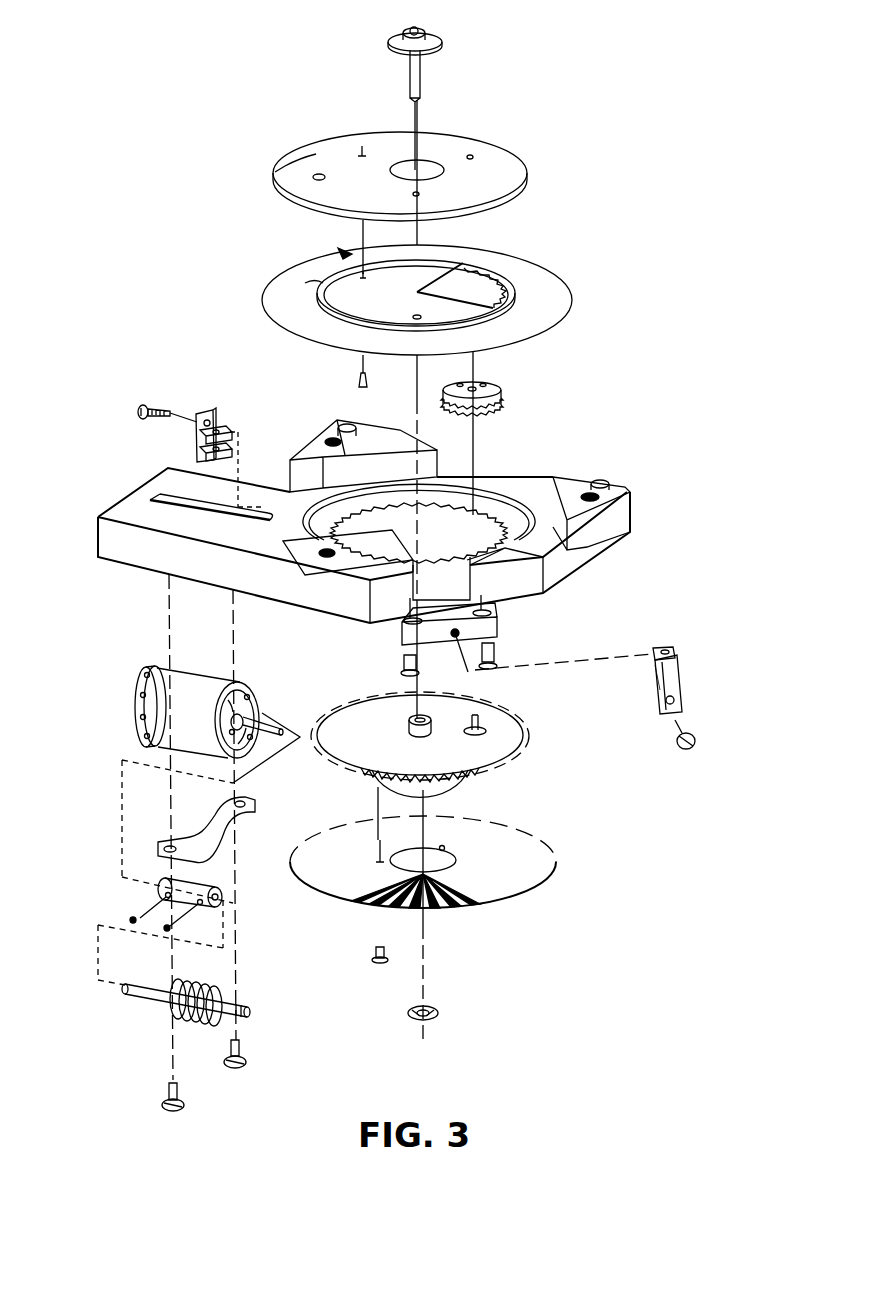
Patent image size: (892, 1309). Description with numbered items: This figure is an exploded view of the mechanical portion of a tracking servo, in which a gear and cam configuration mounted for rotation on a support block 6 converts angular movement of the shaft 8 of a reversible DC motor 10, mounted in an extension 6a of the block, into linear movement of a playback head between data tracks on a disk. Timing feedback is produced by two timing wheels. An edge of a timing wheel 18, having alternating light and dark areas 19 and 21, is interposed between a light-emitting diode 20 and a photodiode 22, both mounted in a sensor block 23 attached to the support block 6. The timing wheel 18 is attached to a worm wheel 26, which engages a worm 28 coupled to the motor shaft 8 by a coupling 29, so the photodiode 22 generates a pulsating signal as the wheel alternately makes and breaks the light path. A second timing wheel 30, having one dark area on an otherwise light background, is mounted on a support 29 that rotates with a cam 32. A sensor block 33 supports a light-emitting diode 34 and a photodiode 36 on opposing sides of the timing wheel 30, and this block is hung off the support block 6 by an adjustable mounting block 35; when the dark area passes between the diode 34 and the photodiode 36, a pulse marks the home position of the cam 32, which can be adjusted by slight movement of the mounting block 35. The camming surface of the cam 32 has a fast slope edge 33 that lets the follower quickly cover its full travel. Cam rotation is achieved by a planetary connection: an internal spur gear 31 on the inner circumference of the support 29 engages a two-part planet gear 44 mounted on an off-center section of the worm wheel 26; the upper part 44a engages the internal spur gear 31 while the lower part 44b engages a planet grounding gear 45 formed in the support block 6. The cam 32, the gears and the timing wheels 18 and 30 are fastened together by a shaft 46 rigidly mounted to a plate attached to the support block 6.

The support block 6 is at (632, 505).
The extension 6a is at (125, 566).
The shaft 8 is at (265, 713).
The reversible DC motor 10 is at (192, 668).
The timing wheel 18 is at (537, 868).
The light areas 19 is at (460, 903).
The light-emitting diode 20 is at (197, 453).
The dark areas 21 is at (492, 903).
The photodiode 22 is at (223, 432).
The sensor block 23 is at (205, 412).
The worm wheel 26 is at (522, 748).
The worm 28 is at (190, 987).
The coupling 29 is at (323, 283).
The timing wheel 30 is at (347, 253).
The internal spur gear 31 is at (470, 267).
The cam 32 is at (508, 163).
The sensor block 33 is at (310, 157).
The light-emitting diode 34 is at (655, 668).
The adjustable mounting block 35 is at (497, 615).
The photodiode 36 is at (670, 650).
The planet gear 44 is at (505, 398).
The upper part 44a is at (458, 378).
The lower part 44b is at (497, 410).
The planet grounding gear 45 is at (350, 527).
The shaft 46 is at (442, 52).